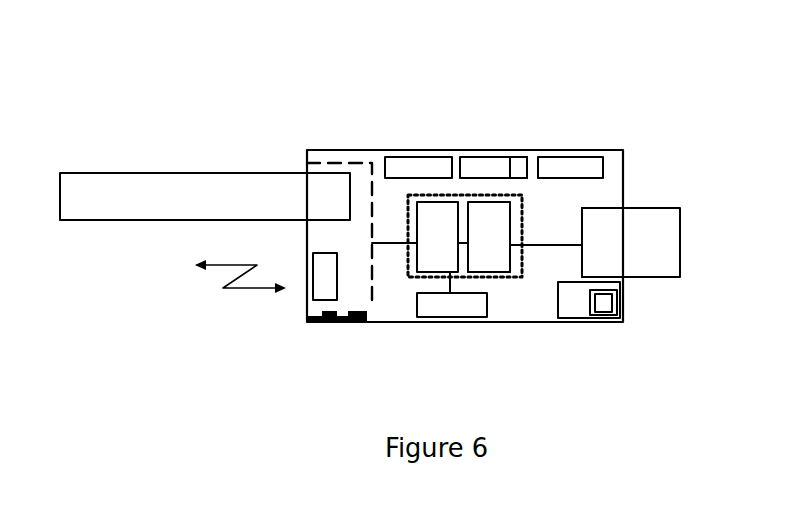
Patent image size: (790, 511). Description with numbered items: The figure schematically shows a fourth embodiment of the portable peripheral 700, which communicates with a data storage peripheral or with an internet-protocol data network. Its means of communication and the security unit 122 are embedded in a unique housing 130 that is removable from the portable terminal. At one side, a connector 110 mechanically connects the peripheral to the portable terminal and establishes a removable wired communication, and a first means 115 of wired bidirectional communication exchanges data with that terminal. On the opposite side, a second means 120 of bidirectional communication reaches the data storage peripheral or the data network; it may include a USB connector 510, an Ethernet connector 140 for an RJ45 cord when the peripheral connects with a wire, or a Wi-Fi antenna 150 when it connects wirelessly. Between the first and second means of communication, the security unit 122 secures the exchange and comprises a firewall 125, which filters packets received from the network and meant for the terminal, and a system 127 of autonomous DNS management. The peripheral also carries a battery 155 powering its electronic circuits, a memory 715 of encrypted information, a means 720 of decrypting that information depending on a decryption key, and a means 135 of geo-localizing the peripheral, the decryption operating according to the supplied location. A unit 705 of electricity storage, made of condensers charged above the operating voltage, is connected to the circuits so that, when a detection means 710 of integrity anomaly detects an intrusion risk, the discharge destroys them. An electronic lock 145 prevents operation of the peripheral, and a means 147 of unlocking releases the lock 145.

The portable peripheral 700 is at (468, 92).
The USB connector 510 is at (163, 187).
The housing 130 is at (618, 149).
The Ethernet connector 140 is at (312, 182).
The antenna 150 is at (322, 268).
The detection means of integrity anomaly 710 is at (317, 323).
The battery 155 is at (410, 165).
The memory of encrypted information 715 is at (465, 160).
The means of decrypting 720 is at (518, 165).
The unit of electricity storage 705 is at (557, 163).
The second means of communication 120 is at (358, 173).
The firewall 125 is at (427, 255).
The security unit 122 is at (495, 280).
The system of autonomous DNS management 127 is at (482, 257).
The means of geo-localizing 135 is at (437, 310).
The electronic lock 145 is at (580, 307).
The means of unlocking 147 is at (607, 303).
The connector 110 is at (647, 267).
The first means of wired bidirectional communication 115 is at (613, 218).